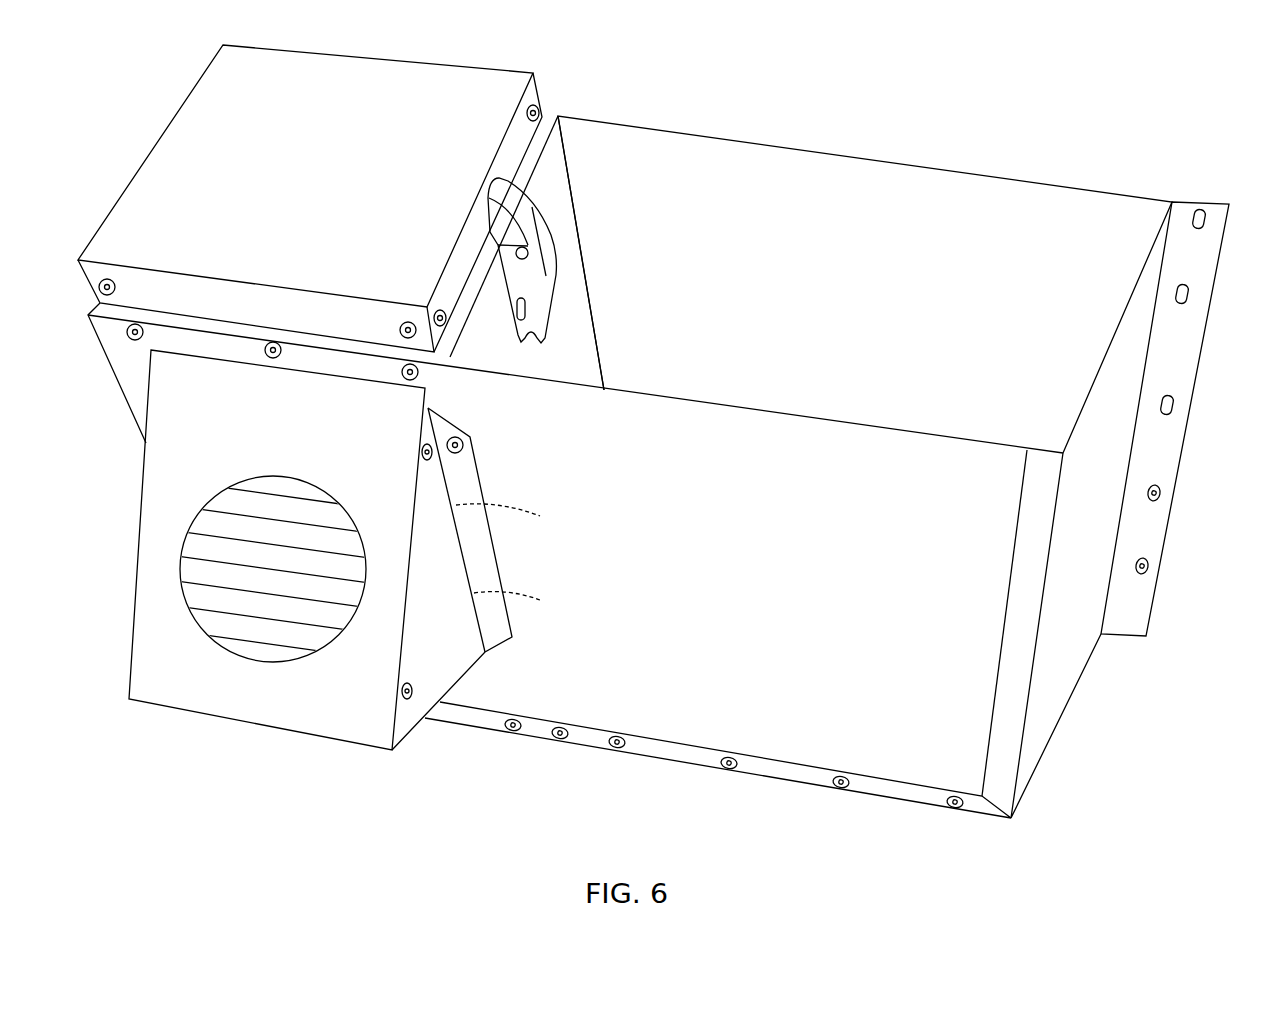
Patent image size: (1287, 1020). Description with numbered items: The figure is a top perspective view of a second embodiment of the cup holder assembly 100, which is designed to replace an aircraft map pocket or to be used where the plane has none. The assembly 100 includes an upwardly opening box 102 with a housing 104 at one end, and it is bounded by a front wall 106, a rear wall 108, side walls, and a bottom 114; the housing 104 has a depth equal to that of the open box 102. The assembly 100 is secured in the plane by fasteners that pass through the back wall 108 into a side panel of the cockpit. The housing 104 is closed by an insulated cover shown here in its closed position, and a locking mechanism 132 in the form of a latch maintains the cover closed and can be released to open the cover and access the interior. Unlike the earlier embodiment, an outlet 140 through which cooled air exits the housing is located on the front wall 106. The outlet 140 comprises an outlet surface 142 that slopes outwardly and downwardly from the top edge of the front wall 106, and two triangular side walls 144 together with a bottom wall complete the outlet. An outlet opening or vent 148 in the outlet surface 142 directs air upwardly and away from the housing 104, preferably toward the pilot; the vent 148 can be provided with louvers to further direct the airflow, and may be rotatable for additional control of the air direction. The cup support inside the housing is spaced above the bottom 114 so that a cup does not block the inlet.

The cup holder assembly 100 is at (676, 460).
The upwardly opening box 102 is at (1176, 656).
The housing 104 is at (396, 47).
The front wall 106 is at (847, 634).
The rear wall 108 is at (964, 253).
The bottom 114 is at (600, 358).
The locking mechanism 132 is at (578, 250).
The outlet 140 is at (370, 550).
The outlet surface 142 is at (283, 438).
The triangular side walls 144 is at (458, 506).
The vent 148 is at (315, 502).